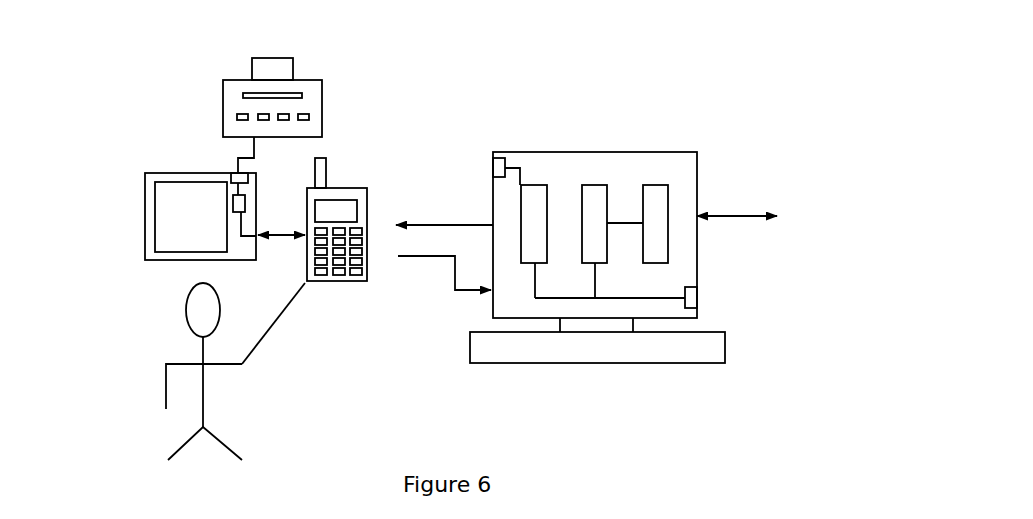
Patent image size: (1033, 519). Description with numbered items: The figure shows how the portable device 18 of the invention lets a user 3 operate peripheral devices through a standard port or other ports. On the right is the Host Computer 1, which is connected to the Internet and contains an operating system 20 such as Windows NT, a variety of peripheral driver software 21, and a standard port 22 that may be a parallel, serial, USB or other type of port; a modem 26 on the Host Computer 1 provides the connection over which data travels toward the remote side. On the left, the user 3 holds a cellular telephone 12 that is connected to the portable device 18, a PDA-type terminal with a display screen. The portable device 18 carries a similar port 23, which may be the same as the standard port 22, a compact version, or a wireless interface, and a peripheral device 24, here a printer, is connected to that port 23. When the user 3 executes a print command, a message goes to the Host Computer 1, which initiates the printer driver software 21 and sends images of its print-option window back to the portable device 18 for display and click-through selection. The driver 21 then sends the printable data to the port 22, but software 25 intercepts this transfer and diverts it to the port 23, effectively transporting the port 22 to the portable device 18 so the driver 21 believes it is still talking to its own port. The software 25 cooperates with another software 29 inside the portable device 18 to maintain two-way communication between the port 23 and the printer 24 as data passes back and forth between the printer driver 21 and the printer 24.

The host computer 1 is at (660, 240).
The user 3 is at (237, 371).
The cellular telephone 12 is at (383, 189).
The portable device 18 is at (176, 194).
The operating system 20 is at (746, 161).
The peripheral driver software 21 is at (641, 164).
The standard port 22 is at (733, 270).
The port 23 is at (190, 113).
The peripheral device 24 is at (354, 101).
The software 25 is at (580, 174).
The modem 26 is at (552, 109).
The software 29 is at (269, 183).